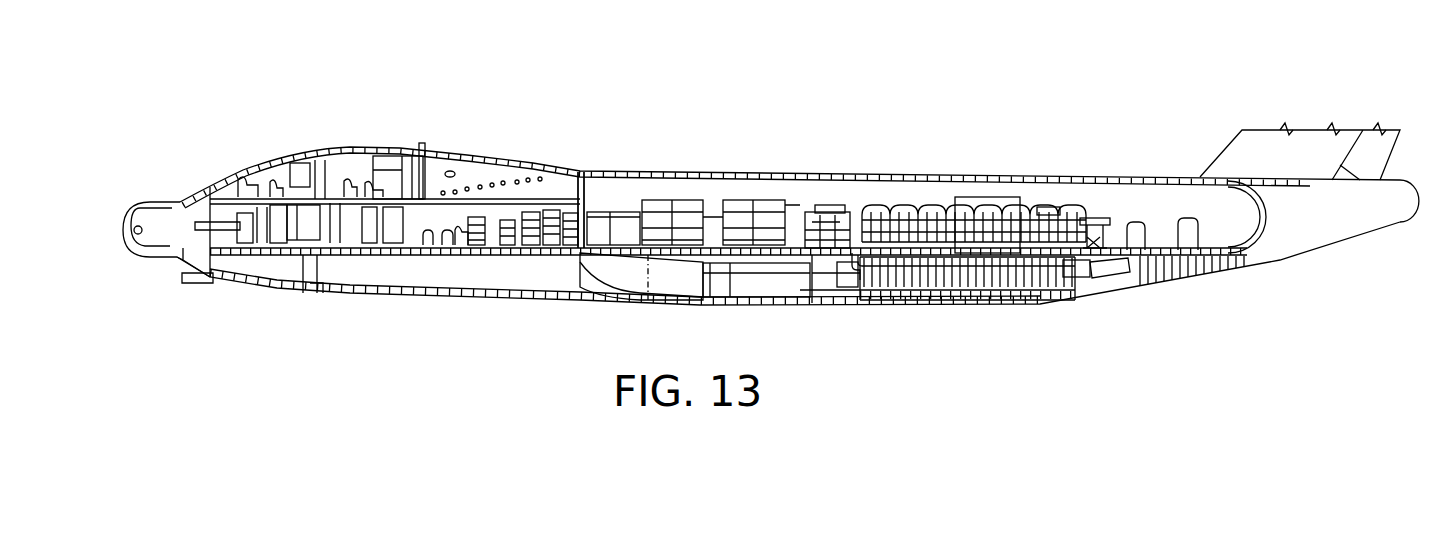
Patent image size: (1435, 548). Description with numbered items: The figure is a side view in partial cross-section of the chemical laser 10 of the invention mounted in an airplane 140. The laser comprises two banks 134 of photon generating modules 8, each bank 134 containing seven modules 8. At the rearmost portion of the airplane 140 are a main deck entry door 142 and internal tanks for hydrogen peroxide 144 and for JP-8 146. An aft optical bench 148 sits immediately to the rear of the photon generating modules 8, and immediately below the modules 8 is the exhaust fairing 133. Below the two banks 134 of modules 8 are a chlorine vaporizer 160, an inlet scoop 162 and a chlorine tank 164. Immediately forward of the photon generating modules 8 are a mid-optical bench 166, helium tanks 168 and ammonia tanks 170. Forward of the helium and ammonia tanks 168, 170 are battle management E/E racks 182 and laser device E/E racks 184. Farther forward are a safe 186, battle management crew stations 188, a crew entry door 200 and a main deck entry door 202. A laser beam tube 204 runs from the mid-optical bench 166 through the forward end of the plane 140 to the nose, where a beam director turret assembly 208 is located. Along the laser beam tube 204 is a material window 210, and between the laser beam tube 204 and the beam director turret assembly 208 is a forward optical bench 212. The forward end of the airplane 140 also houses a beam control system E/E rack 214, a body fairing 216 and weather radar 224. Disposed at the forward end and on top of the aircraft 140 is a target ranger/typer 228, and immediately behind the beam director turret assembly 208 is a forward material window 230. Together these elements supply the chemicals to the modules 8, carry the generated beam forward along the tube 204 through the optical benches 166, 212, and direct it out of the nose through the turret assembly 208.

The photon generating modules 8 is at (996, 188).
The chemical laser 10 is at (1048, 190).
The exhaust fairing 133 is at (982, 307).
The banks 134 is at (934, 188).
The airplane 140 is at (358, 140).
The main deck entry door 142 is at (1200, 243).
The internal tank for hydrogen peroxide 144 is at (1137, 220).
The internal tank for JP-8 146 is at (1108, 278).
The aft optical bench 148 is at (1090, 218).
The chlorine vaporizer 160 is at (850, 278).
The inlet scoop 162 is at (862, 290).
The chlorine tank 164 is at (840, 275).
The mid-optical bench 166 is at (832, 207).
The helium tanks 168 is at (767, 202).
The ammonia tanks 170 is at (625, 210).
The battle management E/E racks 182 is at (510, 217).
The laser device E/E racks 184 is at (543, 210).
The safe 186 is at (460, 240).
The battle management crew stations 188 is at (475, 210).
The crew entry door 200 is at (300, 195).
The main deck entry door 202 is at (318, 215).
The laser beam tube 204 is at (455, 203).
The beam director turret assembly 208 is at (150, 258).
The material window 210 is at (582, 210).
The forward optical bench 212 is at (302, 220).
The beam control system E/E rack 214 is at (255, 232).
The body fairing 216 is at (653, 300).
The weather radar 224 is at (186, 262).
The target ranger/typer 228 is at (416, 156).
The forward material window 230 is at (183, 258).